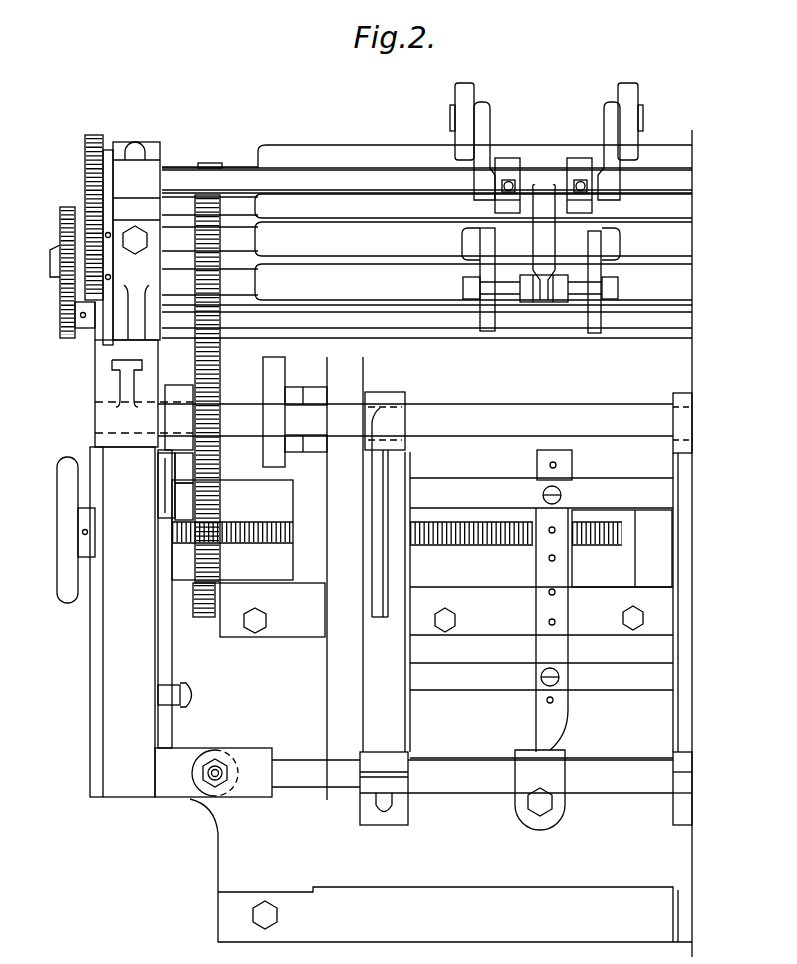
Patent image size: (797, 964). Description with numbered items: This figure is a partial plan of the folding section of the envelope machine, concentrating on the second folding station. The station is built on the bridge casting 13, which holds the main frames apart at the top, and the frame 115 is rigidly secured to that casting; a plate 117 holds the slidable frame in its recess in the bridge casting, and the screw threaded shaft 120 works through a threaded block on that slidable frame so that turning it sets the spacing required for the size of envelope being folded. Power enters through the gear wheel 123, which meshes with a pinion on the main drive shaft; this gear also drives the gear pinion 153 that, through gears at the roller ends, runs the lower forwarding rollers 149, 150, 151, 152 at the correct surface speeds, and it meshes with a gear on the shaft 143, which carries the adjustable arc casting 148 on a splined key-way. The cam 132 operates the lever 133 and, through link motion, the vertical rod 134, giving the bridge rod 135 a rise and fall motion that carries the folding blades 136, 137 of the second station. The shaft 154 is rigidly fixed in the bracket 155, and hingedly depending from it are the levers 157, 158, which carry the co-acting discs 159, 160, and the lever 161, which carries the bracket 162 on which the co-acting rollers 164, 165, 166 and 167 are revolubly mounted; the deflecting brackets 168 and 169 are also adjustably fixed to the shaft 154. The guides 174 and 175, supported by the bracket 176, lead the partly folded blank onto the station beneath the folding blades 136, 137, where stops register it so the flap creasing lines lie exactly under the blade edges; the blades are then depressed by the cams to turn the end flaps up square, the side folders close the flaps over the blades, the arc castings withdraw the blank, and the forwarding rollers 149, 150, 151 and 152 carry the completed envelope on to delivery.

The bridge casting 13 is at (236, 870).
The frame 115 is at (116, 700).
The plate 117 is at (297, 622).
The screw threaded shaft 120 is at (484, 536).
The gear wheel 123 is at (216, 359).
The cam 132 is at (180, 470).
The lever 133 is at (164, 654).
The vertical rod 134 is at (210, 780).
The bridge rod 135 is at (457, 775).
The folding blade 136 is at (390, 726).
The folding blade 137 is at (681, 721).
The shaft 143 is at (551, 420).
The arc casting 148 is at (383, 487).
The lower forwarding roller 149 is at (287, 157).
The lower forwarding roller 150 is at (473, 239).
The lower forwarding roller 151 is at (473, 282).
The lower forwarding roller 152 is at (437, 320).
The gear pinion 153 is at (215, 163).
The shaft 154 is at (343, 185).
The bracket 155 is at (142, 183).
The lever 157 is at (479, 127).
The lever 158 is at (608, 132).
The co-acting disc 159 is at (462, 97).
The co-acting disc 160 is at (625, 97).
The lever 161 is at (546, 241).
The bracket 162 is at (462, 283).
The co-acting roller 164 is at (462, 238).
The co-acting roller 165 is at (610, 243).
The co-acting roller 166 is at (600, 290).
The co-acting roller 167 is at (606, 323).
The deflecting bracket 168 is at (500, 211).
The deflecting bracket 169 is at (600, 211).
The guide 174 is at (500, 678).
The guide 175 is at (513, 500).
The bracket 176 is at (546, 611).